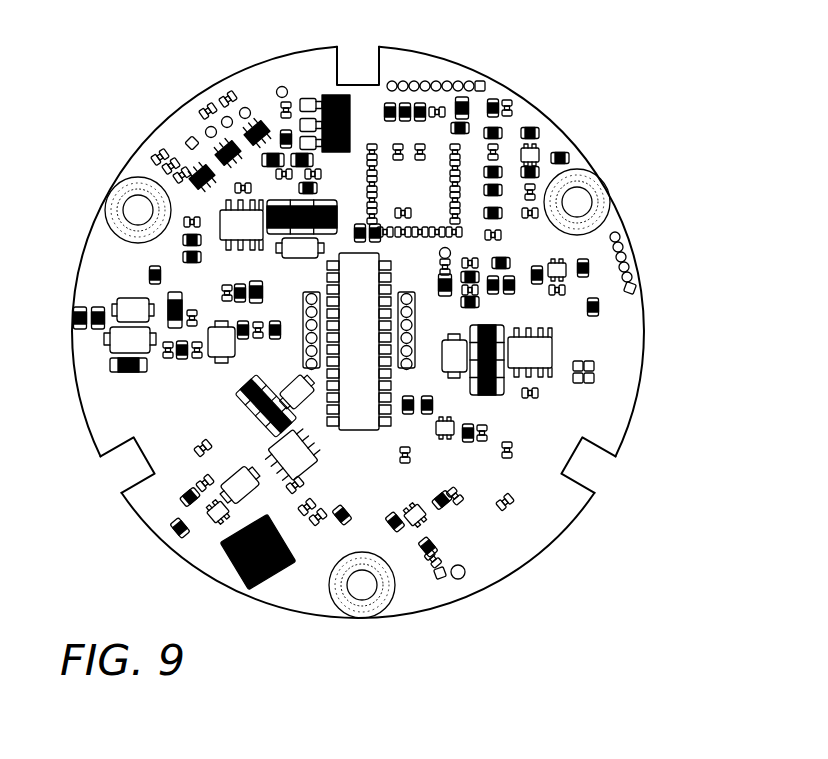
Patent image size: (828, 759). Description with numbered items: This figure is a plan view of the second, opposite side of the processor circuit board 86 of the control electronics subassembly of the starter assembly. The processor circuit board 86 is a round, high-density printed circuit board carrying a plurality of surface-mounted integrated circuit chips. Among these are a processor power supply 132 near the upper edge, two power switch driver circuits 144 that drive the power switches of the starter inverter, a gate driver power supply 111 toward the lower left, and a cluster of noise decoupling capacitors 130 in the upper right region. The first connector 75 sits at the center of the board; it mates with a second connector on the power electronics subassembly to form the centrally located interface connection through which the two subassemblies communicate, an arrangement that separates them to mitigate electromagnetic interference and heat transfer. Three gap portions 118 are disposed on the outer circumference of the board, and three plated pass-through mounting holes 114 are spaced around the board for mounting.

The processor circuit board 86 is at (498, 80).
The gap portions 118 is at (357, 67).
The plated pass-through mounting holes 114 is at (123, 210).
The first connector 75 is at (370, 372).
The noise decoupling capacitors 130 is at (463, 165).
The processor power supply 132 is at (287, 118).
The power switch driver circuits 144 is at (233, 222).
The gate driver power supply 111 is at (227, 563).